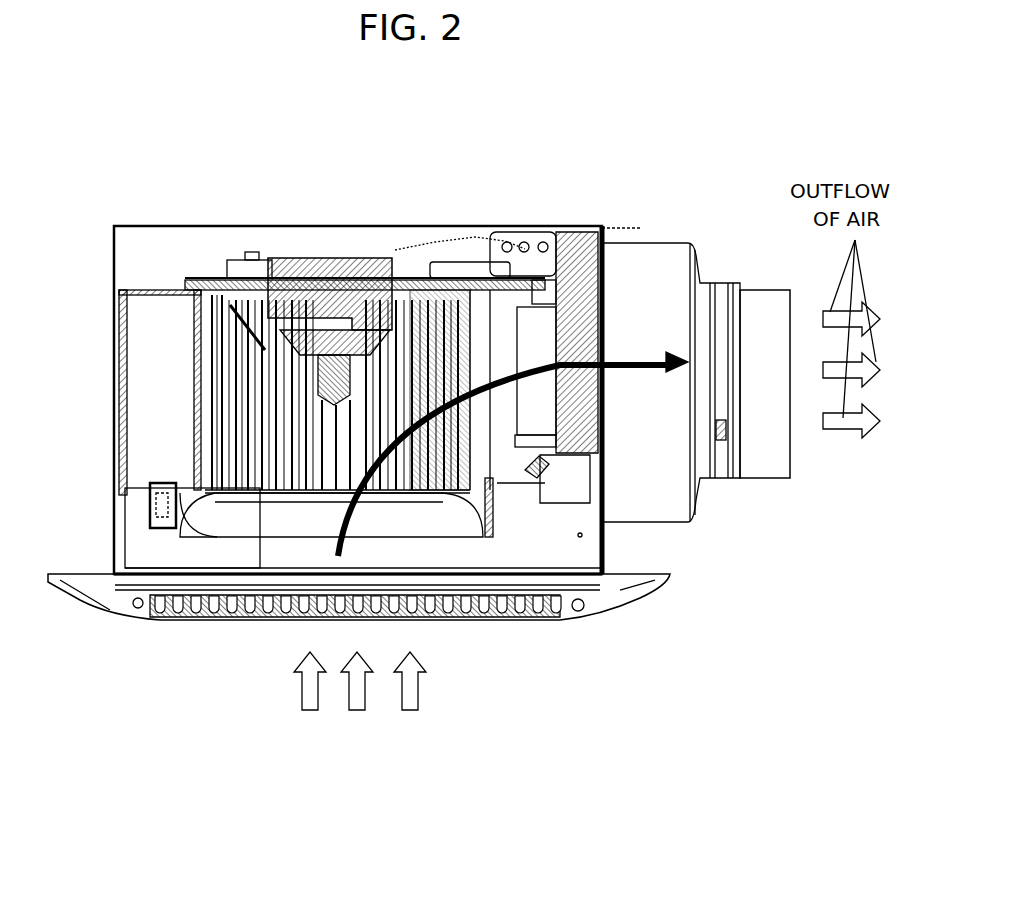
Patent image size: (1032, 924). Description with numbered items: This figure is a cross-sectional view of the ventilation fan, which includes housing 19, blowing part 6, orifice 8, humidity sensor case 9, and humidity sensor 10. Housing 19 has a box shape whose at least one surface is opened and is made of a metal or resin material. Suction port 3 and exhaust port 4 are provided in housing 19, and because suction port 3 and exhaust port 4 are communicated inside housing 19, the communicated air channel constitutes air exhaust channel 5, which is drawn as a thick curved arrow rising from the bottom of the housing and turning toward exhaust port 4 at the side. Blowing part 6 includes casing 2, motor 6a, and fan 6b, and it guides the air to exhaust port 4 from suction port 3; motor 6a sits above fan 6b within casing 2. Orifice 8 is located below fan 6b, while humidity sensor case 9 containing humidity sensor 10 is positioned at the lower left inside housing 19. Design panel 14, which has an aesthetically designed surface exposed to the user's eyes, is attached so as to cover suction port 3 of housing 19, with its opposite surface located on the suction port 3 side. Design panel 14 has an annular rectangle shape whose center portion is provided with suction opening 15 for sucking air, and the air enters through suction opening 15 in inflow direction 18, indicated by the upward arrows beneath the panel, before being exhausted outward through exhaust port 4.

The casing 2 is at (210, 338).
The suction port 3 is at (300, 545).
The exhaust port 4 is at (640, 250).
The air exhaust channel 5 is at (606, 368).
The blowing part 6 is at (291, 282).
The motor 6a is at (332, 360).
The fan 6b is at (240, 373).
The orifice 8 is at (245, 515).
The humidity sensor case 9 is at (160, 515).
The humidity sensor 10 is at (150, 500).
The design panel 14 is at (620, 578).
The suction opening 15 is at (540, 622).
The inflow direction 18 is at (403, 690).
The housing 19 is at (470, 226).